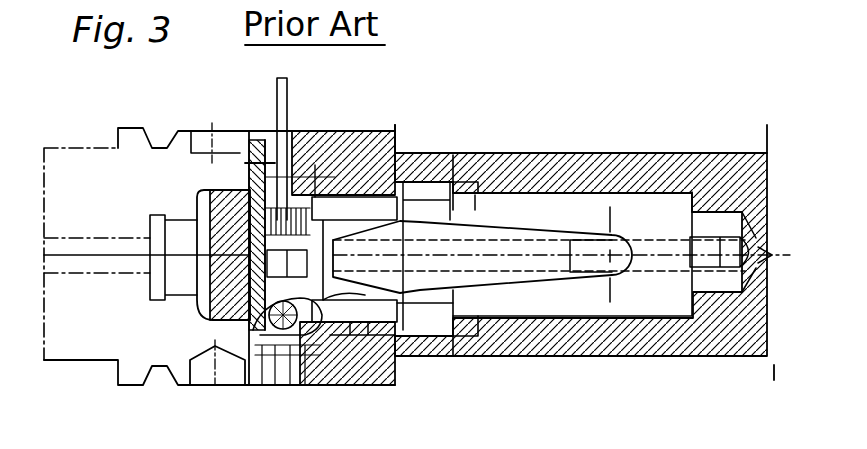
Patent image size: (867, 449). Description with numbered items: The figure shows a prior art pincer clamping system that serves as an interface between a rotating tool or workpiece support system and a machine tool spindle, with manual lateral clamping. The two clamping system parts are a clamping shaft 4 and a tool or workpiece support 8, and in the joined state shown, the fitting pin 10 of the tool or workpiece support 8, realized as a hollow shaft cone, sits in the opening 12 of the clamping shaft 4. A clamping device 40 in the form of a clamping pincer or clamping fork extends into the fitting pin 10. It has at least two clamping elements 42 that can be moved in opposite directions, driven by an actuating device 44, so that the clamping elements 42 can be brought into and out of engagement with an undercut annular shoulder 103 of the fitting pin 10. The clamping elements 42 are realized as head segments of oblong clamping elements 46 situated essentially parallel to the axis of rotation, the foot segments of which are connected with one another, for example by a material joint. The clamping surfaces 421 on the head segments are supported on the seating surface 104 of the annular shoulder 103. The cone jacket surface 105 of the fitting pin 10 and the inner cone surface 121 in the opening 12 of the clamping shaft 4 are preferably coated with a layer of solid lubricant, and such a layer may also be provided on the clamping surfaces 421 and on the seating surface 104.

The clamping shaft 4 is at (697, 342).
The tool or workpiece support 8 is at (66, 347).
The fitting pin 10 is at (240, 155).
The opening 12 is at (400, 153).
The clamping device 40 is at (591, 306).
The clamping elements 42 is at (250, 190).
The actuating device 44 is at (308, 190).
The oblong clamping elements 46 is at (477, 210).
The annular shoulder 103 is at (311, 380).
The seating surface 104 is at (367, 378).
The cone jacket surface 105 is at (286, 385).
The inner cone surface 121 is at (316, 190).
The clamping surfaces 421 is at (330, 165).